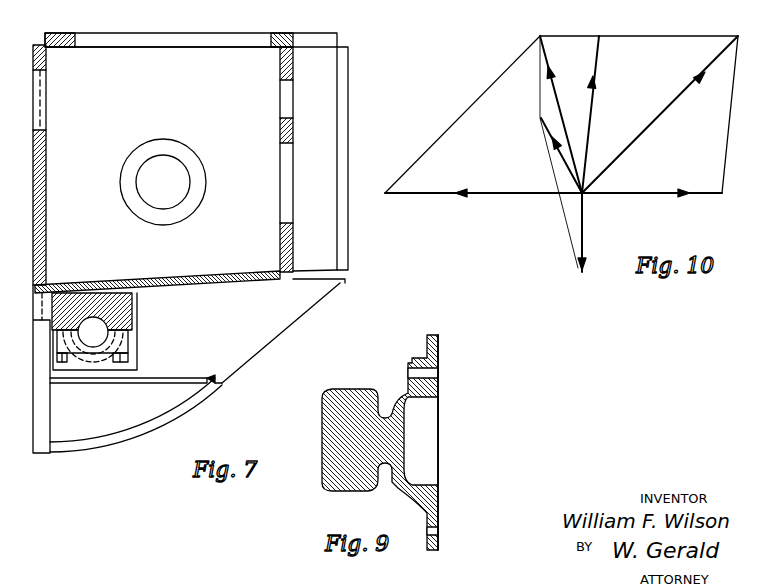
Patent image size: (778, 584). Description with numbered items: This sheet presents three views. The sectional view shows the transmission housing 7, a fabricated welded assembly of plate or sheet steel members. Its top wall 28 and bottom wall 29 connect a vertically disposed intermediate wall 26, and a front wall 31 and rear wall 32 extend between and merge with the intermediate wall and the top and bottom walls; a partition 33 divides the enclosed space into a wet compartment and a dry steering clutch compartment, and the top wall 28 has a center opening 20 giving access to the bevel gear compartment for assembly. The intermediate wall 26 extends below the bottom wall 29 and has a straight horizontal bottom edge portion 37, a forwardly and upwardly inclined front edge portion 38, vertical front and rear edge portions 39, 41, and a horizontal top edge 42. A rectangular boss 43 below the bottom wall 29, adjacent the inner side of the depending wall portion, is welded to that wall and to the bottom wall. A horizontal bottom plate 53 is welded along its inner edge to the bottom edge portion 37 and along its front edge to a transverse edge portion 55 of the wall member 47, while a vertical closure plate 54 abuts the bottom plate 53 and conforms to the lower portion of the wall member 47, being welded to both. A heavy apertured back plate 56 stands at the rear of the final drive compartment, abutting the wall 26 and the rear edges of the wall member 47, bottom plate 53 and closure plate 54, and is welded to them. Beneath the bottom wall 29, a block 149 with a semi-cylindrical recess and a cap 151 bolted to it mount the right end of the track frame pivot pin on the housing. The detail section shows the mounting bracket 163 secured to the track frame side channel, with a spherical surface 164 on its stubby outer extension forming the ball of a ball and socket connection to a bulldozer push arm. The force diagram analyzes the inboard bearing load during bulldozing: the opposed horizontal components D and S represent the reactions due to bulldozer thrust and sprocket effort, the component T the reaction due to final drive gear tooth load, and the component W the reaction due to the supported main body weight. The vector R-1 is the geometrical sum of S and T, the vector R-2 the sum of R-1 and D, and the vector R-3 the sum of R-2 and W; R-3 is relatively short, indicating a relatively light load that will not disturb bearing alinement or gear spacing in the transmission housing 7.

In FIG. 7, the transmission housing 7 is at (242, 48).
In FIG. 7, the center opening 20 is at (175, 37).
In FIG. 7, the intermediate wall 26 is at (247, 347).
In FIG. 7, the top wall 28 is at (276, 32).
In FIG. 7, the bottom wall 29 is at (245, 275).
In FIG. 7, the front wall 31 is at (295, 68).
In FIG. 7, the rear wall 32 is at (47, 235).
In FIG. 7, the partition 33 is at (112, 53).
In FIG. 7, the bottom edge portion 37 is at (214, 381).
In FIG. 7, the front edge portion 38 is at (307, 305).
In FIG. 7, the front edge portion 39 is at (340, 127).
In FIG. 7, the rear edge portion 41 is at (35, 90).
In FIG. 7, the top edge 42 is at (82, 43).
In FIG. 7, the rectangular boss 43 is at (138, 359).
In FIG. 7, the wall member 47 is at (146, 443).
In FIG. 7, the bottom plate 53 is at (138, 385).
In FIG. 7, the closure plate 54 is at (173, 403).
In FIG. 7, the transverse edge portion 55 is at (208, 379).
In FIG. 7, the back plate 56 is at (43, 453).
In FIG. 7, the block 149 is at (132, 300).
In FIG. 7, the cap 151 is at (125, 340).
In FIG. 9, the mounting bracket 163 is at (443, 417).
In FIG. 9, the spherical surface 164 is at (362, 380).
In FIG. 10, the vector R-1 is at (660, 114).
In FIG. 10, the vector R-2 is at (561, 114).
In FIG. 10, the vector R-3 is at (553, 152).
In FIG. 10, the force component T is at (594, 114).
In FIG. 10, the force component S is at (652, 201).
In FIG. 10, the force component D is at (483, 201).
In FIG. 10, the force component W is at (593, 232).